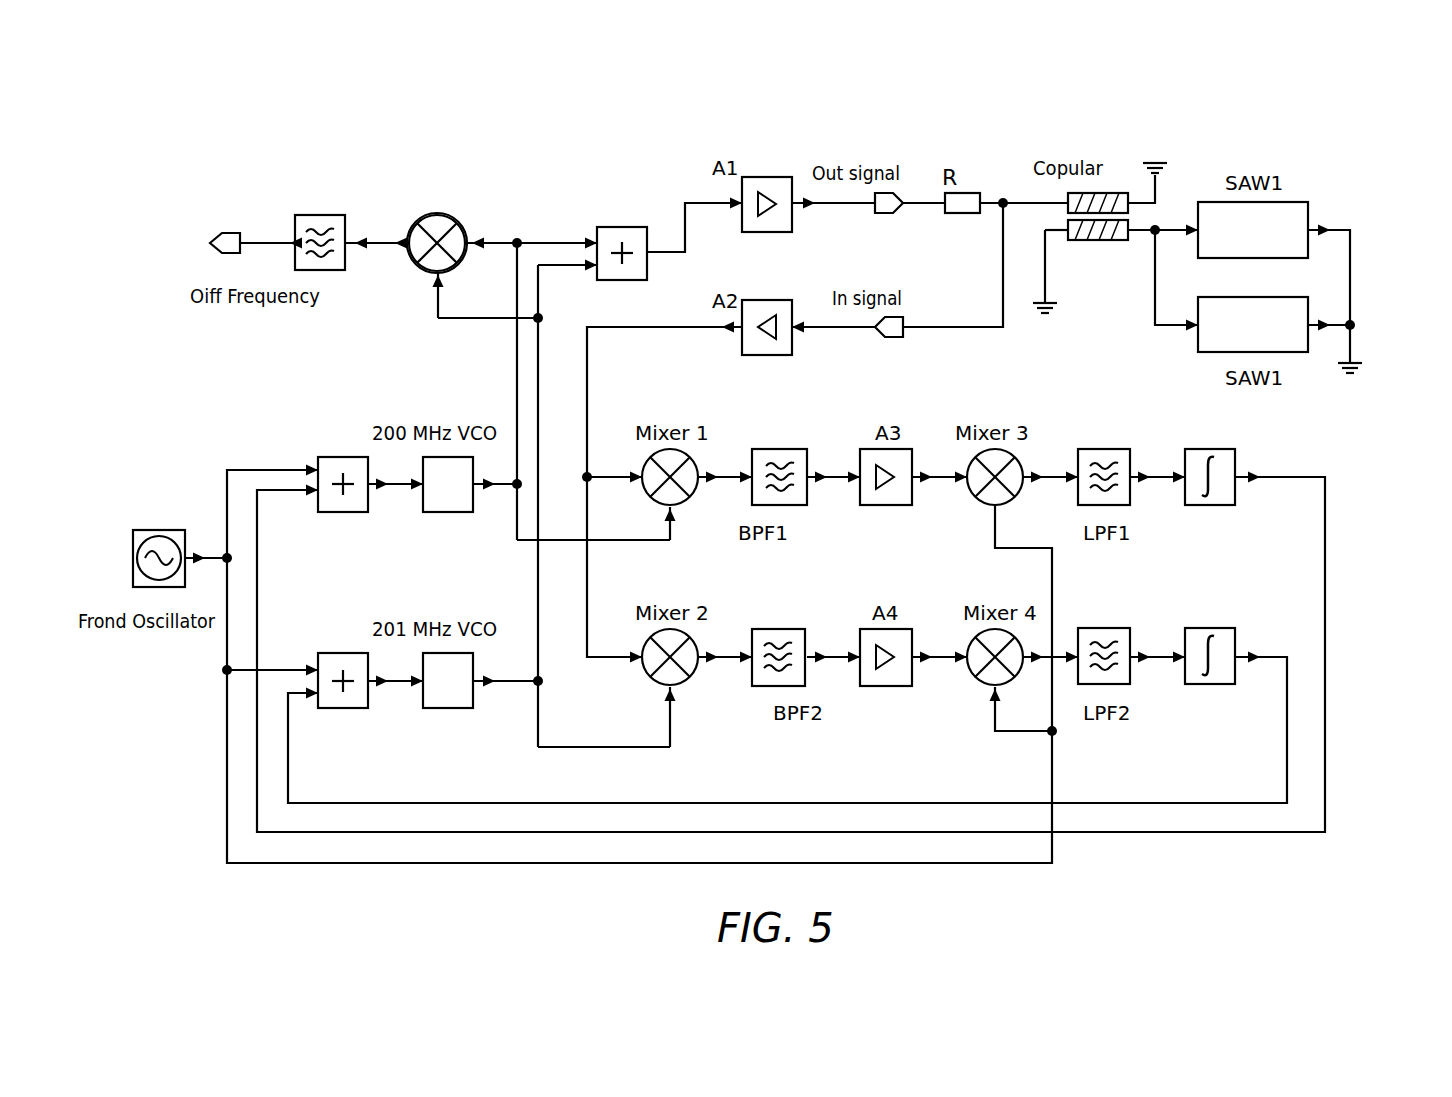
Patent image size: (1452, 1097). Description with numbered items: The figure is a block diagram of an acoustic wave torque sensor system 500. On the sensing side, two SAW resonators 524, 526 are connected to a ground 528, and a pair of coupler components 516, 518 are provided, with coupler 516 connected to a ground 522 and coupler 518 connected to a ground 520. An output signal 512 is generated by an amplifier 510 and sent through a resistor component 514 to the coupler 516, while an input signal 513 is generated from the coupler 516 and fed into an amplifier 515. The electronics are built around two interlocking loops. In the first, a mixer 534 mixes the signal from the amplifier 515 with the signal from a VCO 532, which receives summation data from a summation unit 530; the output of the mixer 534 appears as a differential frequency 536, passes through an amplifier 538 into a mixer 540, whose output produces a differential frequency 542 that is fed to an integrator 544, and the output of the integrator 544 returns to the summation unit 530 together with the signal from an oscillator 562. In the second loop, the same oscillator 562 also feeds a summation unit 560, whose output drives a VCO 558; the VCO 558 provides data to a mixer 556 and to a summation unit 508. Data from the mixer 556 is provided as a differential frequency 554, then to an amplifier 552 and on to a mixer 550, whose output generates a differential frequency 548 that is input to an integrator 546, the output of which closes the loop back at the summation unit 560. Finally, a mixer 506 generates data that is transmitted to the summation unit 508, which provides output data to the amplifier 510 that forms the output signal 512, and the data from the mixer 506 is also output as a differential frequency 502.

The acoustic wave torque sensor system 500 is at (1362, 100).
The differential frequency 502 is at (318, 215).
The mixer 506 is at (462, 222).
The summation unit 508 is at (641, 227).
The amplifier 510 is at (765, 177).
The output signal 512 is at (903, 193).
The input signal 513 is at (903, 317).
The resistor component 514 is at (975, 193).
The amplifier 515 is at (792, 350).
The coupler 516 is at (1108, 193).
The coupler 518 is at (1095, 240).
The ground 520 is at (1050, 314).
The ground 522 is at (1160, 160).
The SAW resonator 524 is at (1297, 202).
The SAW resonator 526 is at (1295, 352).
The ground 528 is at (1374, 365).
The summation unit 530 is at (330, 457).
The VCO 532 is at (453, 512).
The mixer 534 is at (692, 457).
The differential frequency 536 is at (797, 505).
The amplifier 538 is at (886, 505).
The mixer 540 is at (1016, 457).
The differential frequency 542 is at (1110, 449).
The integrator 544 is at (1210, 505).
The integrator 546 is at (1235, 635).
The differential frequency 548 is at (1130, 680).
The mixer 550 is at (983, 681).
The amplifier 552 is at (885, 686).
The differential frequency 554 is at (765, 686).
The mixer 556 is at (650, 674).
The VCO 558 is at (452, 708).
The summation unit 560 is at (342, 708).
The oscillator 562 is at (158, 530).